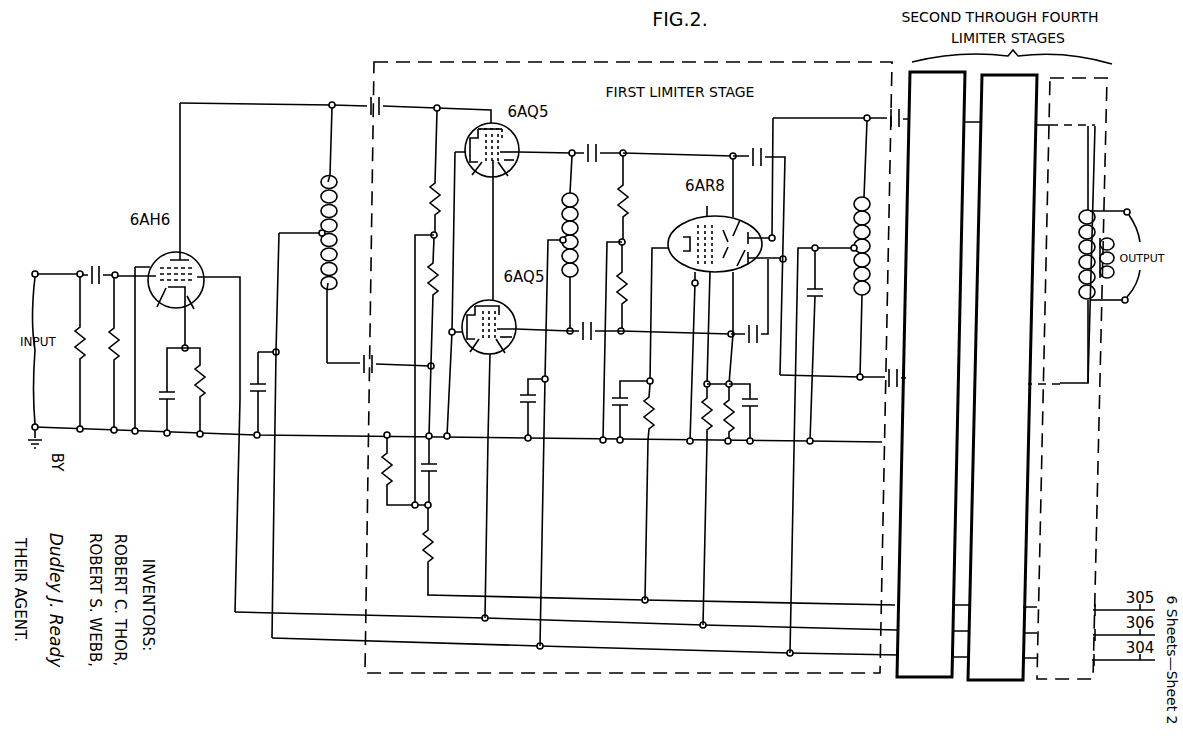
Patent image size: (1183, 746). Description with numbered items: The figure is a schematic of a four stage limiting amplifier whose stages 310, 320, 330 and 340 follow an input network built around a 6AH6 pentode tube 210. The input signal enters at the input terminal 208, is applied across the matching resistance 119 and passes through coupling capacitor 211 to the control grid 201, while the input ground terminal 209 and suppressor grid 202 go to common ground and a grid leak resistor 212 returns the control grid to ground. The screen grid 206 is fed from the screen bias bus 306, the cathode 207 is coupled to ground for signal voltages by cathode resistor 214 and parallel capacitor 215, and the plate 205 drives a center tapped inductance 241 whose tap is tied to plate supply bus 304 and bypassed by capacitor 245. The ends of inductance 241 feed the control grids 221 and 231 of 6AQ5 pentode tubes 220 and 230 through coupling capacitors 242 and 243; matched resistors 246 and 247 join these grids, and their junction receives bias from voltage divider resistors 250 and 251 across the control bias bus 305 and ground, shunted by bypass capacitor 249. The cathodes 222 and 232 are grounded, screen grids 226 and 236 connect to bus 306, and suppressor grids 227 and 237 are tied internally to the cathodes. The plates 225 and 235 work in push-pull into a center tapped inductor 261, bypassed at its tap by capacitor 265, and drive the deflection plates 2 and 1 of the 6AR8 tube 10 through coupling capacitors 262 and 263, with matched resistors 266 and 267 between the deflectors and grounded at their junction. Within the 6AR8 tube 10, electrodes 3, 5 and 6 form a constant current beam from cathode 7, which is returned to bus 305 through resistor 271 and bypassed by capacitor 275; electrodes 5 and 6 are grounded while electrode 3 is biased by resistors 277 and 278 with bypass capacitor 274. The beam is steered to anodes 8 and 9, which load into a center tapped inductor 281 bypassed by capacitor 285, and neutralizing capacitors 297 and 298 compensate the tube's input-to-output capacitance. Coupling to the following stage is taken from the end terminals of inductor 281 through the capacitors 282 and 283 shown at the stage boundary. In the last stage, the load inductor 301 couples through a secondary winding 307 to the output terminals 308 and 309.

The matching resistance 119 is at (76, 335).
The control grid 201 is at (164, 319).
The suppressor grid 202 is at (165, 262).
The plate 205 is at (189, 257).
The screen grid 206 is at (200, 275).
The cathode 207 is at (191, 298).
The input terminal 208 is at (49, 260).
The input ground terminal 209 is at (38, 422).
The 6AH6 tube 210 is at (203, 259).
The coupling capacitor 211 is at (99, 264).
The grid leak resistor 212 is at (110, 335).
The cathode resistor 214 is at (205, 385).
The capacitor 215 is at (164, 394).
The 6AQ5 pentode tube 220 is at (492, 112).
The control grid 221 is at (470, 178).
The cathode 222 is at (471, 140).
The plate 225 is at (516, 142).
The screen grid 226 is at (514, 230).
The suppressor grid 227 is at (519, 158).
The 6AQ5 pentode tube 230 is at (488, 300).
The control grid 231 is at (475, 355).
The cathode 232 is at (470, 310).
The plate 235 is at (512, 322).
The screen grid 236 is at (500, 355).
The suppressor grid 237 is at (506, 343).
The center tapped inductance 241 is at (320, 191).
The coupling capacitor 242 is at (371, 102).
The coupling capacitor 243 is at (364, 368).
The capacitor 245 is at (266, 392).
The matched resistor 246 is at (428, 199).
The matched resistor 247 is at (427, 279).
The bypass capacitor 249 is at (437, 468).
The voltage divider resistor 250 is at (380, 476).
The voltage divider resistor 251 is at (434, 545).
The center tapped inductor 261 is at (560, 218).
The coupling capacitor 262 is at (591, 144).
The coupling capacitor 263 is at (587, 340).
The capacitor 265 is at (520, 392).
The matched resistor 266 is at (620, 191).
The matched resistor 267 is at (619, 288).
The resistor 271 is at (656, 410).
The bypass capacitor 274 is at (752, 406).
The capacitor 275 is at (610, 402).
The resistor 277 is at (736, 431).
The resistor 278 is at (705, 430).
The center tapped inductor 281 is at (853, 210).
The coupling capacitor 282 is at (890, 112).
The coupling capacitor 283 is at (892, 385).
The capacitor 285 is at (819, 297).
The neutralizing capacitor 297 is at (752, 340).
The neutralizing capacitor 298 is at (756, 148).
The load inductor 301 is at (1085, 211).
The plate supply bus 304 is at (305, 642).
The control bias bus 305 is at (431, 596).
The screen bias bus 306 is at (240, 615).
The secondary winding 307 is at (1084, 302).
The output terminal 308 is at (1128, 208).
The output terminal 309 is at (1125, 305).
The first stage 310 is at (605, 62).
The second stage 320 is at (923, 101).
The third stage 330 is at (995, 104).
The fourth stage 340 is at (1066, 106).
The deflection plate 1 is at (735, 328).
The deflection plate 2 is at (739, 185).
The electrode 3 is at (714, 328).
The electrode 5 is at (687, 358).
The electrode 6 is at (707, 204).
The cathode 7 is at (672, 254).
The anode 8 is at (767, 268).
The anode 9 is at (762, 232).
The 6AR8 tube 10 is at (681, 226).